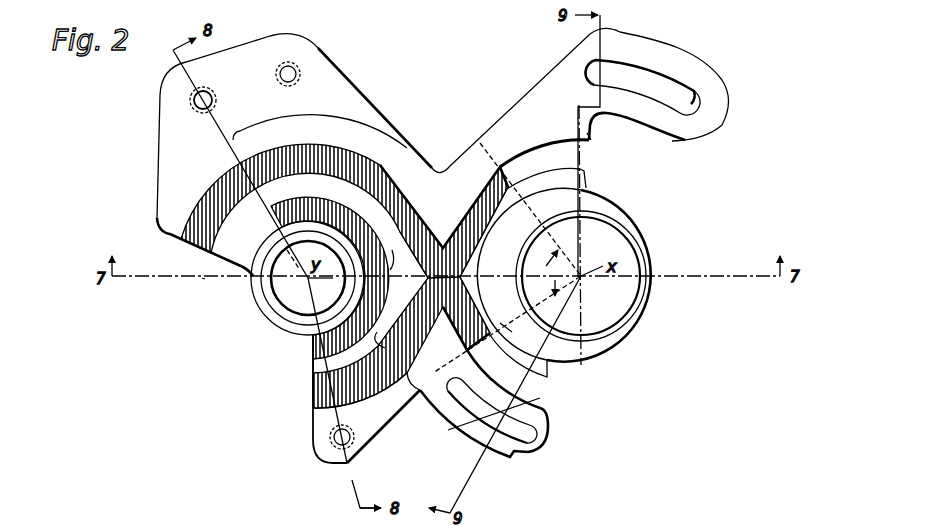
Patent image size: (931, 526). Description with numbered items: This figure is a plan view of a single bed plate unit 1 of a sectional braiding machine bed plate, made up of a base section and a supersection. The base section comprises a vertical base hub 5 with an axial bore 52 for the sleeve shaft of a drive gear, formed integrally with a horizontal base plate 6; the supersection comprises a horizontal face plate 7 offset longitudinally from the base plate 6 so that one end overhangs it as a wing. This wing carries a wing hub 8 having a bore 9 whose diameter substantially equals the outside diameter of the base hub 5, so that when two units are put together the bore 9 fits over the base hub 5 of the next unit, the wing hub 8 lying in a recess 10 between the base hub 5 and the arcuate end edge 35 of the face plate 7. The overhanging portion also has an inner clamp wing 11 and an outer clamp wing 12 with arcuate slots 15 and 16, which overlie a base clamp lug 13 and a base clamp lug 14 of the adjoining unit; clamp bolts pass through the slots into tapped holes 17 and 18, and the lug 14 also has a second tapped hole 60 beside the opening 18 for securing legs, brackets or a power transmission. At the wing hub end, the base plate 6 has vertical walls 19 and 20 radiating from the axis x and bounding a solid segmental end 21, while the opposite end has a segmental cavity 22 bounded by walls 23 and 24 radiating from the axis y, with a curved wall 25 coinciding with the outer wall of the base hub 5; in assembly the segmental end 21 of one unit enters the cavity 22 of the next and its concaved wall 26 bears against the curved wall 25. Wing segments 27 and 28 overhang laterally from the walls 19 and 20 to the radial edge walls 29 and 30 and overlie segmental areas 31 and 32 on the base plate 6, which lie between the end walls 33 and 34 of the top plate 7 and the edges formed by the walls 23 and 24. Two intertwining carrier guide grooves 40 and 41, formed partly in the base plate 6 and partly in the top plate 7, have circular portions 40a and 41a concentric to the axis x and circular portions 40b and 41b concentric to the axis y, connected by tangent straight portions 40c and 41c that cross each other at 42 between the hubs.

The bed plate unit 1 is at (438, 168).
The base hub 5 is at (263, 298).
The horizontal plate 6 is at (157, 196).
The horizontal plate 7 is at (642, 337).
The wing hub 8 is at (658, 238).
The bore 9 is at (638, 305).
The recess 10 is at (305, 349).
The inner clamp wing 11 is at (548, 430).
The outer clamp wing 12 is at (723, 92).
The base clamp lug 13 is at (335, 462).
The base clamp lug 14 is at (342, 72).
The arcuate slot 15 is at (530, 420).
The arcuate slot 16 is at (660, 78).
The tapped hole 17 is at (355, 437).
The tapped hole 18 is at (281, 62).
The vertical wall 19 is at (513, 335).
The vertical wall 20 is at (528, 192).
The solid segmental end 21 is at (550, 280).
The segmental cavity 22 is at (165, 236).
The vertical wall 23 is at (222, 262).
The vertical wall 24 is at (312, 380).
The curved wall 25 is at (272, 302).
The concaved wall 26 is at (543, 257).
The wing segment 27 is at (486, 426).
The wing segment 28 is at (583, 133).
The radial edge wall 29 is at (551, 376).
The radial edge wall 30 is at (606, 180).
The segmental area 31 is at (211, 218).
The segmental area 32 is at (360, 386).
The end wall 33 is at (262, 196).
The end wall 34 is at (390, 335).
The arcuate end edge 35 is at (390, 258).
The carrier guide groove 40 is at (401, 180).
The circular portion 40a is at (346, 153).
The circular portion 40b is at (478, 345).
The straight portion 40c is at (470, 300).
The carrier guide groove 41 is at (460, 204).
The circular portion 41a is at (320, 398).
The circular portion 41b is at (523, 162).
The straight portion 41c is at (475, 235).
The intersection 42 is at (450, 268).
The axial bore 52 is at (272, 282).
The second tapped hole 60 is at (216, 100).